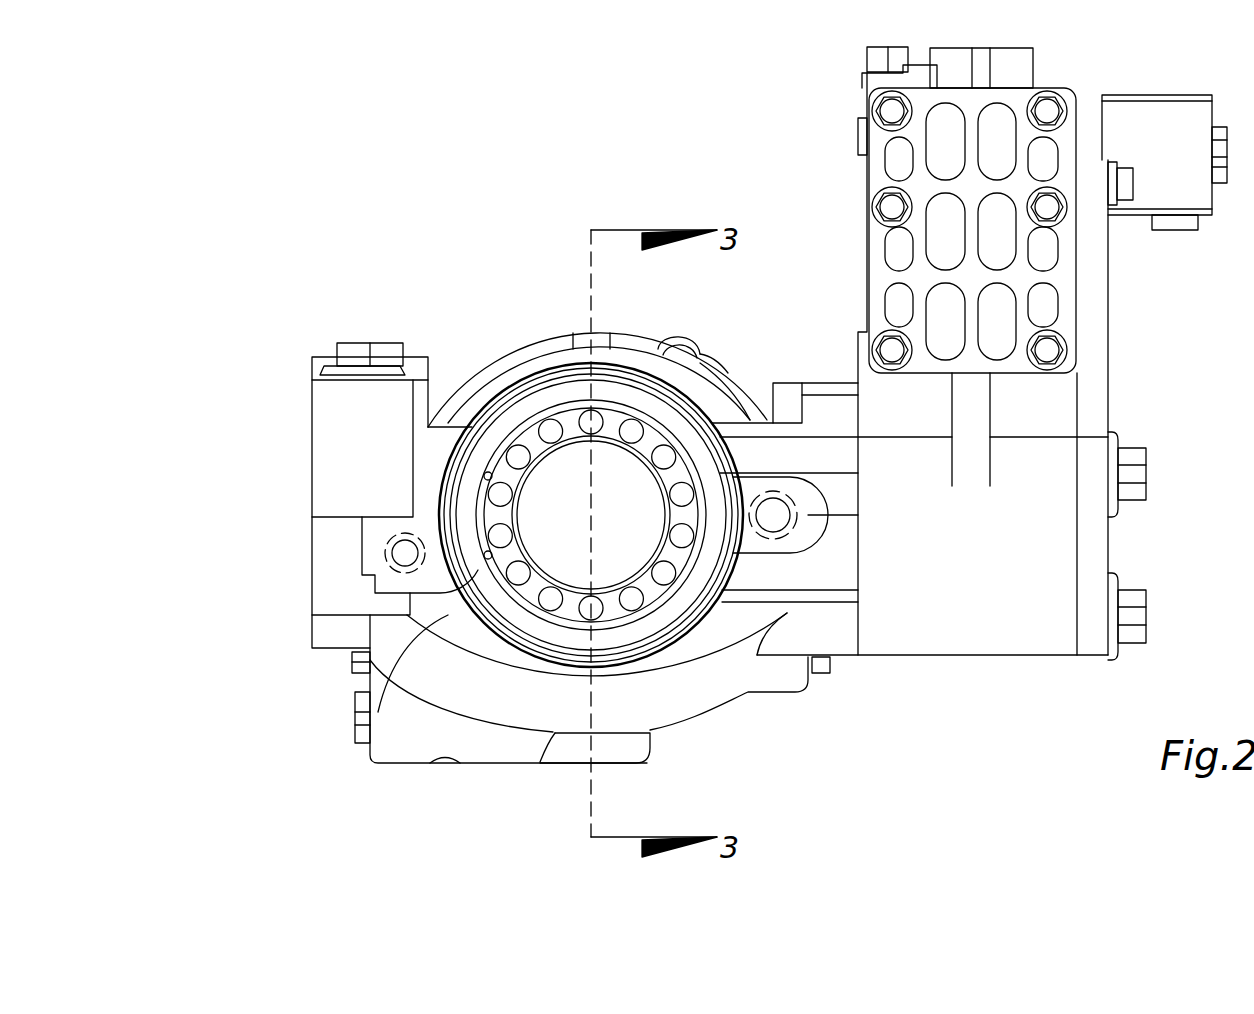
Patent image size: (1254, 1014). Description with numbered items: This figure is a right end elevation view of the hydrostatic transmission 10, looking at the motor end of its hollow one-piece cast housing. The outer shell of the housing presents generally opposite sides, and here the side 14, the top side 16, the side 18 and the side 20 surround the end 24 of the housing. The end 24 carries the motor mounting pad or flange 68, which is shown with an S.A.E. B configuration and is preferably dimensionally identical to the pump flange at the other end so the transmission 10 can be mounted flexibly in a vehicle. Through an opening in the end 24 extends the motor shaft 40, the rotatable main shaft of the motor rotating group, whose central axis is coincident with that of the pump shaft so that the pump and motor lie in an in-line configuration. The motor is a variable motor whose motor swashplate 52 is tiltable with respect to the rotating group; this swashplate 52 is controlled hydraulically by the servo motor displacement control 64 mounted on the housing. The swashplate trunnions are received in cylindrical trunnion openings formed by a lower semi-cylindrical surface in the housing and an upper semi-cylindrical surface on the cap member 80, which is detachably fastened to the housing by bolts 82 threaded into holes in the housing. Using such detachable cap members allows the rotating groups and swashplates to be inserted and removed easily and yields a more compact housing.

The hydrostatic transmission 10 is at (247, 185).
The side 14 is at (312, 445).
The top side 16 is at (621, 333).
The side 18 is at (810, 686).
The side 20 is at (626, 765).
The end 24 is at (356, 692).
The motor shaft 40 is at (603, 483).
The motor swashplate 52 is at (503, 355).
The servo motor displacement control 64 is at (858, 86).
The motor mounting flange 68 is at (553, 637).
The cap member 80 is at (318, 356).
The bolts 82 is at (352, 343).